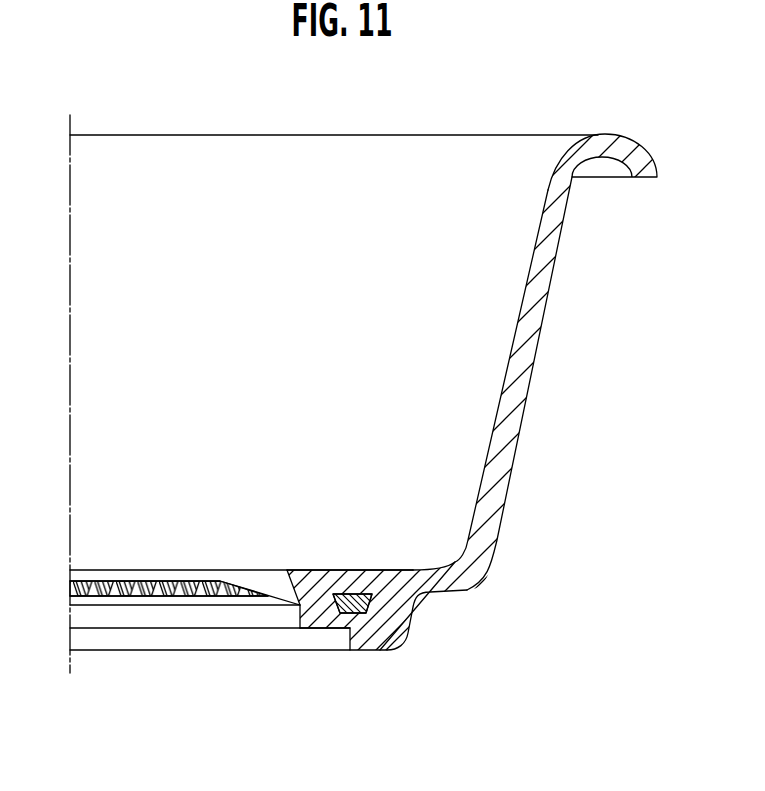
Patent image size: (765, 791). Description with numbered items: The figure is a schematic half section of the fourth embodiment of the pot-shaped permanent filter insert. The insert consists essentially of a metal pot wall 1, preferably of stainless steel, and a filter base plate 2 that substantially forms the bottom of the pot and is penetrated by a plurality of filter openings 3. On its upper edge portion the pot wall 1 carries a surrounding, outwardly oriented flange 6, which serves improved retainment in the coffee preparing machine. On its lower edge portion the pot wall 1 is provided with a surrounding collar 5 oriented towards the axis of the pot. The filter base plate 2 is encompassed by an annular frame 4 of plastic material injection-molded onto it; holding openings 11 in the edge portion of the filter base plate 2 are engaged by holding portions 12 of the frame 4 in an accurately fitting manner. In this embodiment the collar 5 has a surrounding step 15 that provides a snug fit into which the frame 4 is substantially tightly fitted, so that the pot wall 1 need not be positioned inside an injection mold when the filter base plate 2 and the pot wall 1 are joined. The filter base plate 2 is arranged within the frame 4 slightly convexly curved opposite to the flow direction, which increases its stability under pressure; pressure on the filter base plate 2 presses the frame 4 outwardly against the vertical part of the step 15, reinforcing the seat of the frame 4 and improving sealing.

The pot wall 1 is at (519, 438).
The filter base plate 2 is at (141, 572).
The filter openings 3 is at (138, 593).
The frame 4 is at (373, 570).
The collar 5 is at (467, 578).
The flange 6 is at (596, 138).
The holding openings 11 is at (302, 598).
The holding portions 12 is at (328, 638).
The step 15 is at (393, 648).